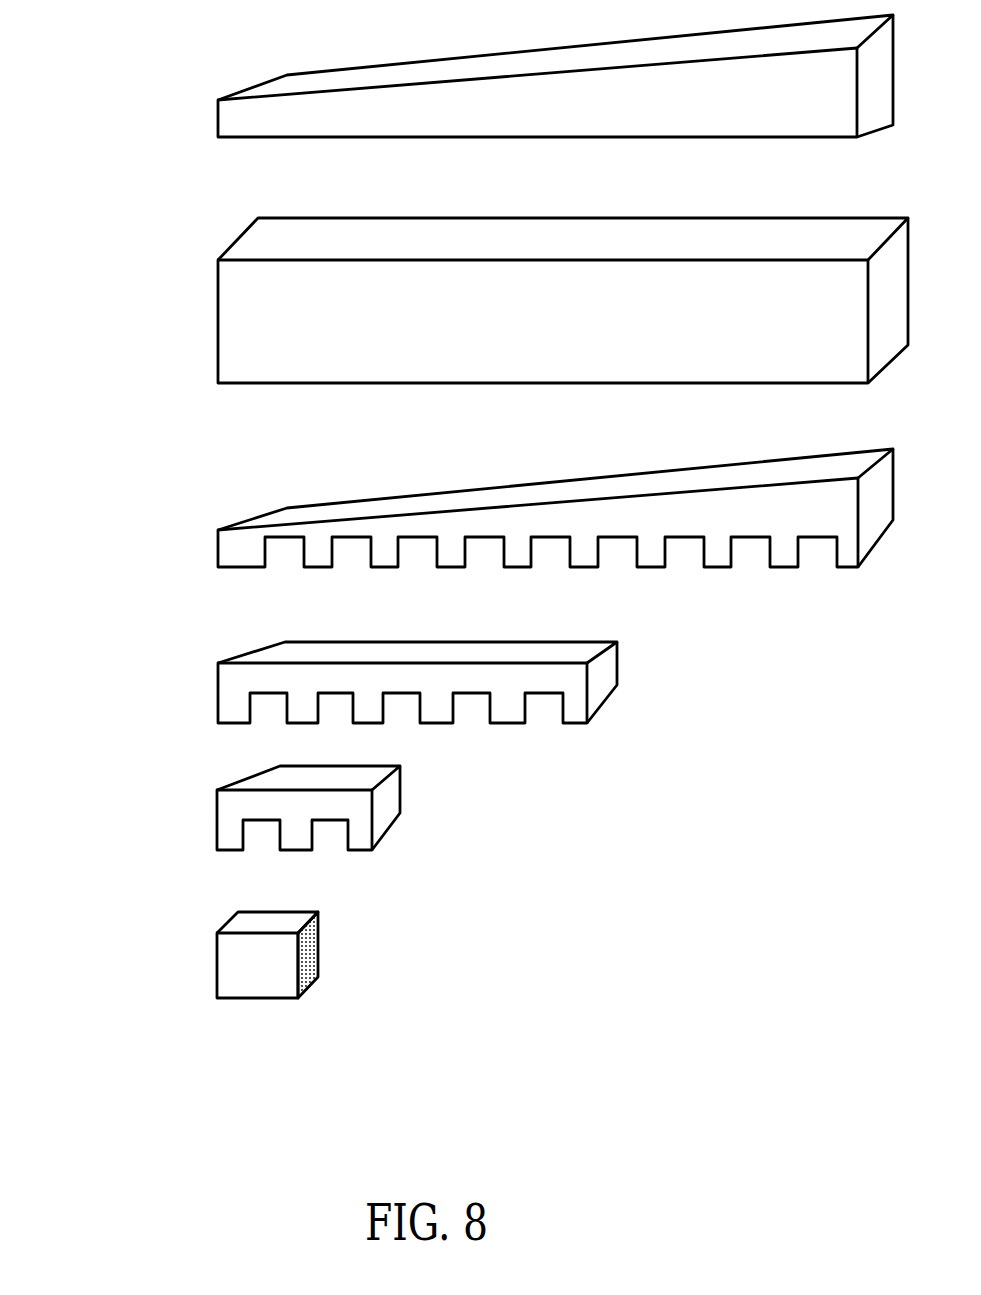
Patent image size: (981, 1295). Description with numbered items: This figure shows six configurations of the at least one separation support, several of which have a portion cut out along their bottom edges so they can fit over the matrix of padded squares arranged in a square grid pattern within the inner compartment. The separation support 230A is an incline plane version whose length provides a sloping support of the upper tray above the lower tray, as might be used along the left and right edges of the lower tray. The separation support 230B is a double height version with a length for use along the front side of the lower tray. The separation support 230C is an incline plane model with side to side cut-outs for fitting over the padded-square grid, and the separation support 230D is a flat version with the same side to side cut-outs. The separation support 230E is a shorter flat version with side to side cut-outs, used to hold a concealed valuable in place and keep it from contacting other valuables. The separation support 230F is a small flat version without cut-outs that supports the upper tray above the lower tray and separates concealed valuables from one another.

The separation support 230A is at (190, 116).
The separation support 230B is at (190, 317).
The separation support 230C is at (190, 543).
The separation support 230D is at (190, 687).
The separation support 230E is at (190, 818).
The separation support 230F is at (190, 965).